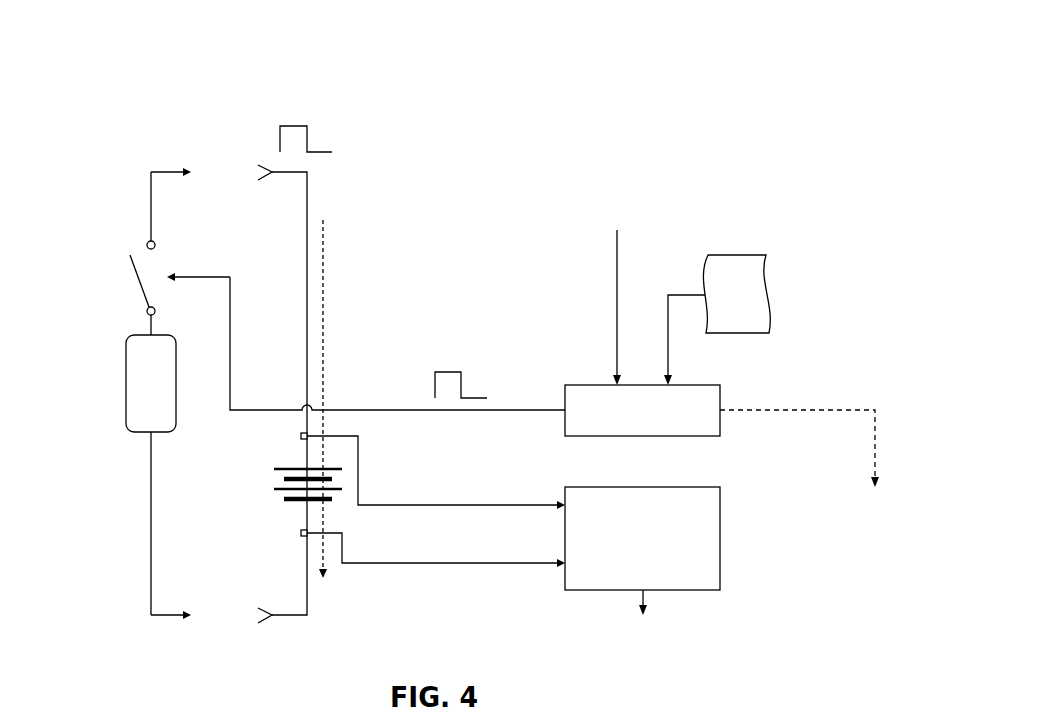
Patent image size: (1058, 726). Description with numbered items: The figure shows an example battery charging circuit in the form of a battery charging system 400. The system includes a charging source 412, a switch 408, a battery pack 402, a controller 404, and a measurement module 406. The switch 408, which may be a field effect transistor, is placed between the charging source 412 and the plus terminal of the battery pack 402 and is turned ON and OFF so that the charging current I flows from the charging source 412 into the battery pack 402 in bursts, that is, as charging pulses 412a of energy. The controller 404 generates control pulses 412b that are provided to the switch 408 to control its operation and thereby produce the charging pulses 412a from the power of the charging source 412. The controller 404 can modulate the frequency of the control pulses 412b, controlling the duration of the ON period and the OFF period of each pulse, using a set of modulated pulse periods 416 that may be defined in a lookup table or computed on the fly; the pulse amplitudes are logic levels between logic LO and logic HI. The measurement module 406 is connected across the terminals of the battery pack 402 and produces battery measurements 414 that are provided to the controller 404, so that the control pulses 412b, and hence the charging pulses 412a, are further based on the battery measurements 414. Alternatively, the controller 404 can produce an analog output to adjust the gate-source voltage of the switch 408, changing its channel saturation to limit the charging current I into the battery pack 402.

The battery charging system 400 is at (801, 98).
The battery pack 402 is at (380, 500).
The controller 404 is at (642, 410).
The measurement module 406 is at (642, 538).
The switch 408 is at (502, 387).
The charging source 412 is at (126, 380).
The charging pulses 412a is at (306, 125).
The control pulses 412b is at (461, 372).
The battery measurements 414 is at (629, 424).
The modulated pulse periods 416 is at (771, 296).